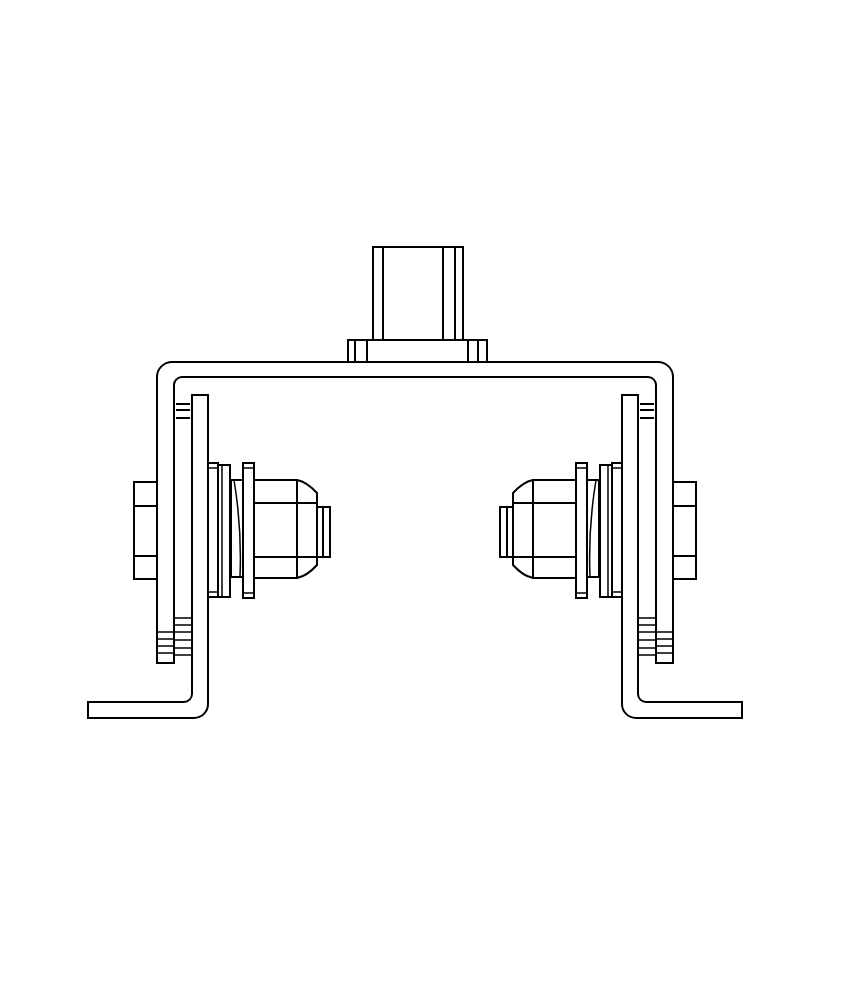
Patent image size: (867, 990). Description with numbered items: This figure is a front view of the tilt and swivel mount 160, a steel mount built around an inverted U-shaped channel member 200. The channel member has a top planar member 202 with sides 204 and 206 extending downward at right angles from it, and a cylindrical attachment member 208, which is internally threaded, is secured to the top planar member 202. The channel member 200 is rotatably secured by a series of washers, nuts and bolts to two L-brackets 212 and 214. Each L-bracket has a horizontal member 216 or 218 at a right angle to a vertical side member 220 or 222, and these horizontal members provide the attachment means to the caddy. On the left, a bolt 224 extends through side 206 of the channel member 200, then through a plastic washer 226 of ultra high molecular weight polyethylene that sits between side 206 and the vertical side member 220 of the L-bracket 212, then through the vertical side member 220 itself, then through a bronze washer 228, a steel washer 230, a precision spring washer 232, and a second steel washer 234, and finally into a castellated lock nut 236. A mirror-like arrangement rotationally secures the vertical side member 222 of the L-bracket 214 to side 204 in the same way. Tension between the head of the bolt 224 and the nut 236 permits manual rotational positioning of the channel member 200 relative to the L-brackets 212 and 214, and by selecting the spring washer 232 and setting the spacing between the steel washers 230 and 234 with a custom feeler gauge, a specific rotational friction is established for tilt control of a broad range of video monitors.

The tilt and swivel mount 160 is at (316, 135).
The inverted U-shaped channel member 200 is at (588, 317).
The top planar member 202 is at (415, 333).
The side 204 is at (702, 527).
The side 206 is at (126, 529).
The cylindrical attachment member 208 is at (451, 292).
The L-bracket 212 is at (245, 691).
The L-bracket 214 is at (586, 693).
The horizontal member 216 is at (97, 729).
The horizontal member 218 is at (731, 727).
The vertical side member 220 is at (233, 492).
The vertical side member 222 is at (580, 497).
The bolt 224 is at (103, 530).
The plastic washer 226 is at (214, 368).
The bronze washer 228 is at (247, 557).
The steel washer 230 is at (281, 546).
The precision spring washer 232 is at (272, 492).
The steel washer 234 is at (283, 516).
The castellated lock nut 236 is at (326, 539).